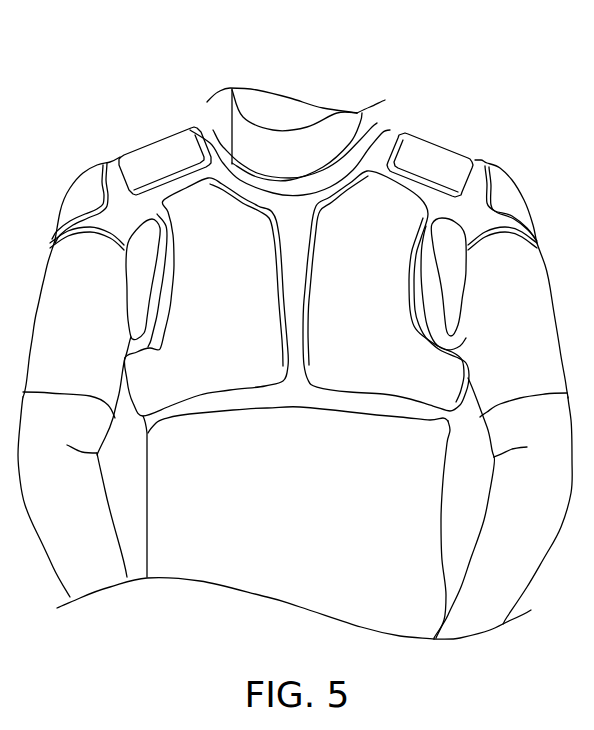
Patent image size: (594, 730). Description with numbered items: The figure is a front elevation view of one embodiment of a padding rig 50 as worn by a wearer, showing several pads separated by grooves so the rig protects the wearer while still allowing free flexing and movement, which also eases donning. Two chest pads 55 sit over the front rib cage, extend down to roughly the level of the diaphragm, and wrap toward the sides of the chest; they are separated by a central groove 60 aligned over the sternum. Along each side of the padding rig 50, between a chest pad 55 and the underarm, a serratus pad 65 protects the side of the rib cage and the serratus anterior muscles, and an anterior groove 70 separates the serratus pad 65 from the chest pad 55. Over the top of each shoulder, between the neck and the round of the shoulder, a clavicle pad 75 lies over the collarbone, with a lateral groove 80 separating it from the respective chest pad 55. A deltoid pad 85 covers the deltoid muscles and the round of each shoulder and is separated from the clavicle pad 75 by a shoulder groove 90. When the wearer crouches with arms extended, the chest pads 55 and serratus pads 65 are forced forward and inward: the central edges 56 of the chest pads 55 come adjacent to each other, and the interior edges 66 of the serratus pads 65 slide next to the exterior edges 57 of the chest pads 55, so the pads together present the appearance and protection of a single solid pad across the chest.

The padding rig 50 is at (58, 95).
The chest pad 55 is at (260, 259).
The central edge 56 is at (281, 268).
The exterior edge 57 is at (173, 287).
The central groove 60 is at (312, 292).
The serratus pad 65 is at (142, 272).
The interior edge 66 is at (163, 238).
The anterior groove 70 is at (163, 317).
The clavicle pad 75 is at (145, 155).
The lateral groove 80 is at (193, 180).
The deltoid pad 85 is at (83, 197).
The shoulder groove 90 is at (115, 163).